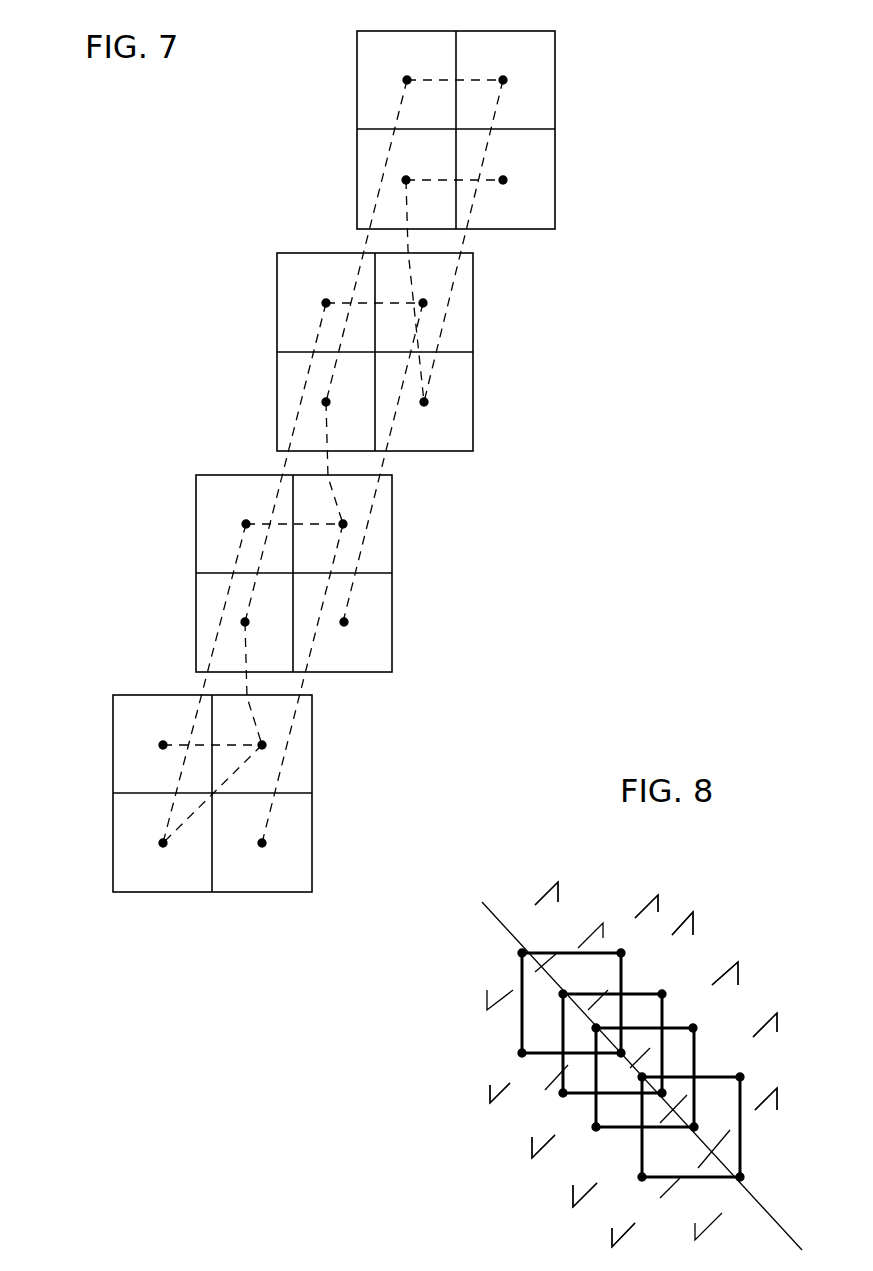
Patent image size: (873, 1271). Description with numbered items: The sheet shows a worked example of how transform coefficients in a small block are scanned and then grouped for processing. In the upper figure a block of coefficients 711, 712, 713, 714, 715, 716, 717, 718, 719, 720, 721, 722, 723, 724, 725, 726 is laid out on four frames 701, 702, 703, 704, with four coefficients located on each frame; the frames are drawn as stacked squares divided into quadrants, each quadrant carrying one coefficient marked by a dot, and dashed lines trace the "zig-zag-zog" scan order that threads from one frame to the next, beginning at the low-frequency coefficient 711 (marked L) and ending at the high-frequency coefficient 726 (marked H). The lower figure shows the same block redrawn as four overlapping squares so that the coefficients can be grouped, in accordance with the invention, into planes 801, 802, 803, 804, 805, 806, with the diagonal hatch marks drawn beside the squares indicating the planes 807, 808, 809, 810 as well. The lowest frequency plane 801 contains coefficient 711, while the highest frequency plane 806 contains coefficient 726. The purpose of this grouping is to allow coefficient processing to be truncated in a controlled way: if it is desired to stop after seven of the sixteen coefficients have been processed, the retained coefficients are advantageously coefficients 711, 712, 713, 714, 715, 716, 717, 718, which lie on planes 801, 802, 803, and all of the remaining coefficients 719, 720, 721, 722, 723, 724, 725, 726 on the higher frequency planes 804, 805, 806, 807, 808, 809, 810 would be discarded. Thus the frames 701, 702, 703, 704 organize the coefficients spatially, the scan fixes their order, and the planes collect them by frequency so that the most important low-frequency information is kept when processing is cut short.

In FIG. 7, the frame 701 is at (111, 735).
In FIG. 8, the frame 701 is at (571, 1003).
In FIG. 7, the frame 702 is at (194, 540).
In FIG. 8, the frame 702 is at (612, 1043).
In FIG. 7, the frame 703 is at (275, 305).
In FIG. 8, the frame 703 is at (645, 1077).
In FIG. 7, the frame 704 is at (355, 90).
In FIG. 8, the frame 704 is at (691, 1127).
In FIG. 7, the coefficient 711 is at (161, 746).
In FIG. 8, the coefficient 711 is at (527, 950).
In FIG. 7, the coefficient 712 is at (405, 78).
In FIG. 8, the coefficient 712 is at (625, 950).
In FIG. 7, the coefficient 713 is at (163, 845).
In FIG. 8, the coefficient 713 is at (520, 1054).
In FIG. 7, the coefficient 714 is at (244, 522).
In FIG. 8, the coefficient 714 is at (565, 992).
In FIG. 7, the coefficient 715 is at (344, 522).
In FIG. 8, the coefficient 715 is at (665, 992).
In FIG. 7, the coefficient 716 is at (264, 845).
In FIG. 8, the coefficient 716 is at (622, 1050).
In FIG. 7, the coefficient 717 is at (247, 624).
In FIG. 8, the coefficient 717 is at (561, 1094).
In FIG. 7, the coefficient 718 is at (324, 301).
In FIG. 8, the coefficient 718 is at (594, 1028).
In FIG. 7, the coefficient 719 is at (424, 301).
In FIG. 8, the coefficient 719 is at (696, 1026).
In FIG. 7, the coefficient 720 is at (346, 624).
In FIG. 8, the coefficient 720 is at (660, 1096).
In FIG. 7, the coefficient 721 is at (328, 404).
In FIG. 8, the coefficient 721 is at (594, 1129).
In FIG. 8, the coefficient 722 is at (645, 1074).
In FIG. 7, the coefficient 723 is at (505, 78).
In FIG. 8, the coefficient 723 is at (744, 1075).
In FIG. 7, the coefficient 724 is at (426, 404).
In FIG. 8, the coefficient 724 is at (692, 1130).
In FIG. 7, the coefficient 725 is at (408, 178).
In FIG. 8, the coefficient 725 is at (640, 1180).
In FIG. 7, the coefficient 726 is at (505, 178).
In FIG. 8, the coefficient 726 is at (743, 1177).
In FIG. 8, the plane 801 is at (520, 1033).
In FIG. 8, the plane 802 is at (558, 1068).
In FIG. 8, the plane 803 is at (590, 1107).
In FIG. 8, the plane 804 is at (630, 1155).
In FIG. 8, the plane 805 is at (565, 892).
In FIG. 8, the plane 806 is at (650, 892).
In FIG. 8, the boundary line 807 is at (695, 925).
In FIG. 8, the boundary line 808 is at (740, 965).
In FIG. 8, the boundary line 809 is at (780, 1020).
In FIG. 8, the boundary line 810 is at (768, 1165).